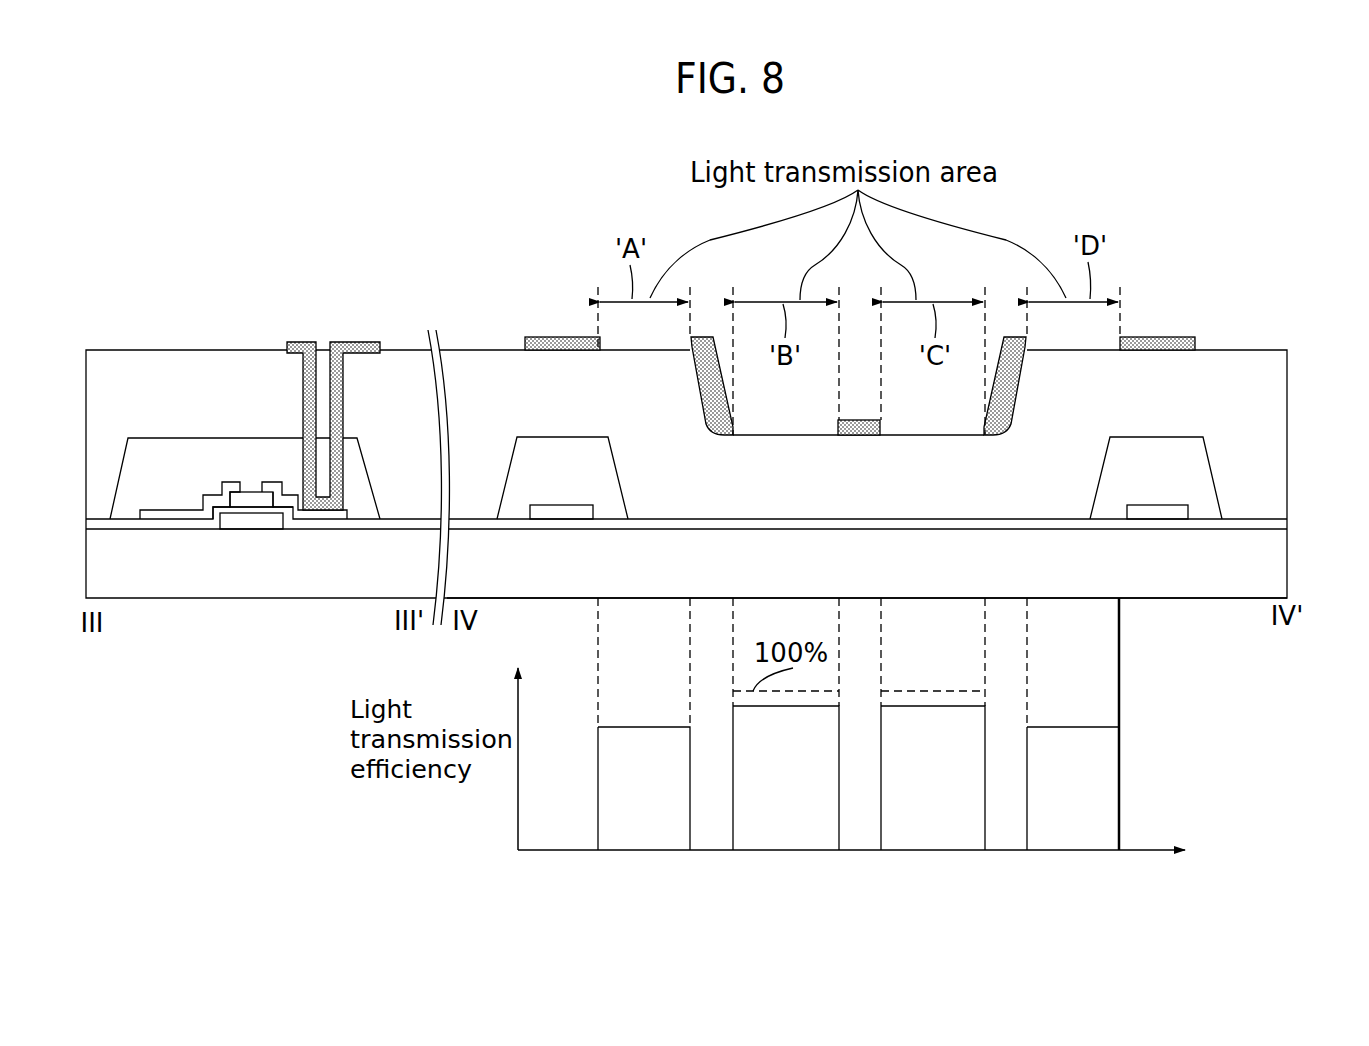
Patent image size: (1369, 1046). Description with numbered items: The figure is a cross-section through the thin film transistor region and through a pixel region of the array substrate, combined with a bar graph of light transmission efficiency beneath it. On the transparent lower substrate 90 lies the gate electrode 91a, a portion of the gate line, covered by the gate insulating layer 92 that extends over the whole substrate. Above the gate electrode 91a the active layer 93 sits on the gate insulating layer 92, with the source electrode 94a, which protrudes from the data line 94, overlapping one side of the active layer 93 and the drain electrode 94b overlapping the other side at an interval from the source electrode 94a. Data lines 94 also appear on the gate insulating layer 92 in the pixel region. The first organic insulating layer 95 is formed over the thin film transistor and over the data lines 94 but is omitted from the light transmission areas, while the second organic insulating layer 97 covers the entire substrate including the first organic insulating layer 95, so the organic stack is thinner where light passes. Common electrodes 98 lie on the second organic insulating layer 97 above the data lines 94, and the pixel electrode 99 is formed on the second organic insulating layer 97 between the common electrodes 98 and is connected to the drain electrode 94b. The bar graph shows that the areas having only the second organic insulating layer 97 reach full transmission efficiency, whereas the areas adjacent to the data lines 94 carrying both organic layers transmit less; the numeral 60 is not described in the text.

The light source 60 is at (932, 599).
The lower substrate 90 is at (1287, 555).
The gate electrode 91a is at (248, 528).
The gate insulating layer 92 is at (328, 526).
The active layer 93 is at (248, 496).
The data line 94 is at (563, 505).
The source electrode 94a is at (167, 518).
The drain electrode 94b is at (270, 489).
The first organic insulating layer 95 is at (607, 480).
The second organic insulating layer 97 is at (1287, 424).
The common electrode 98 is at (555, 337).
The pixel electrode 99 is at (356, 342).